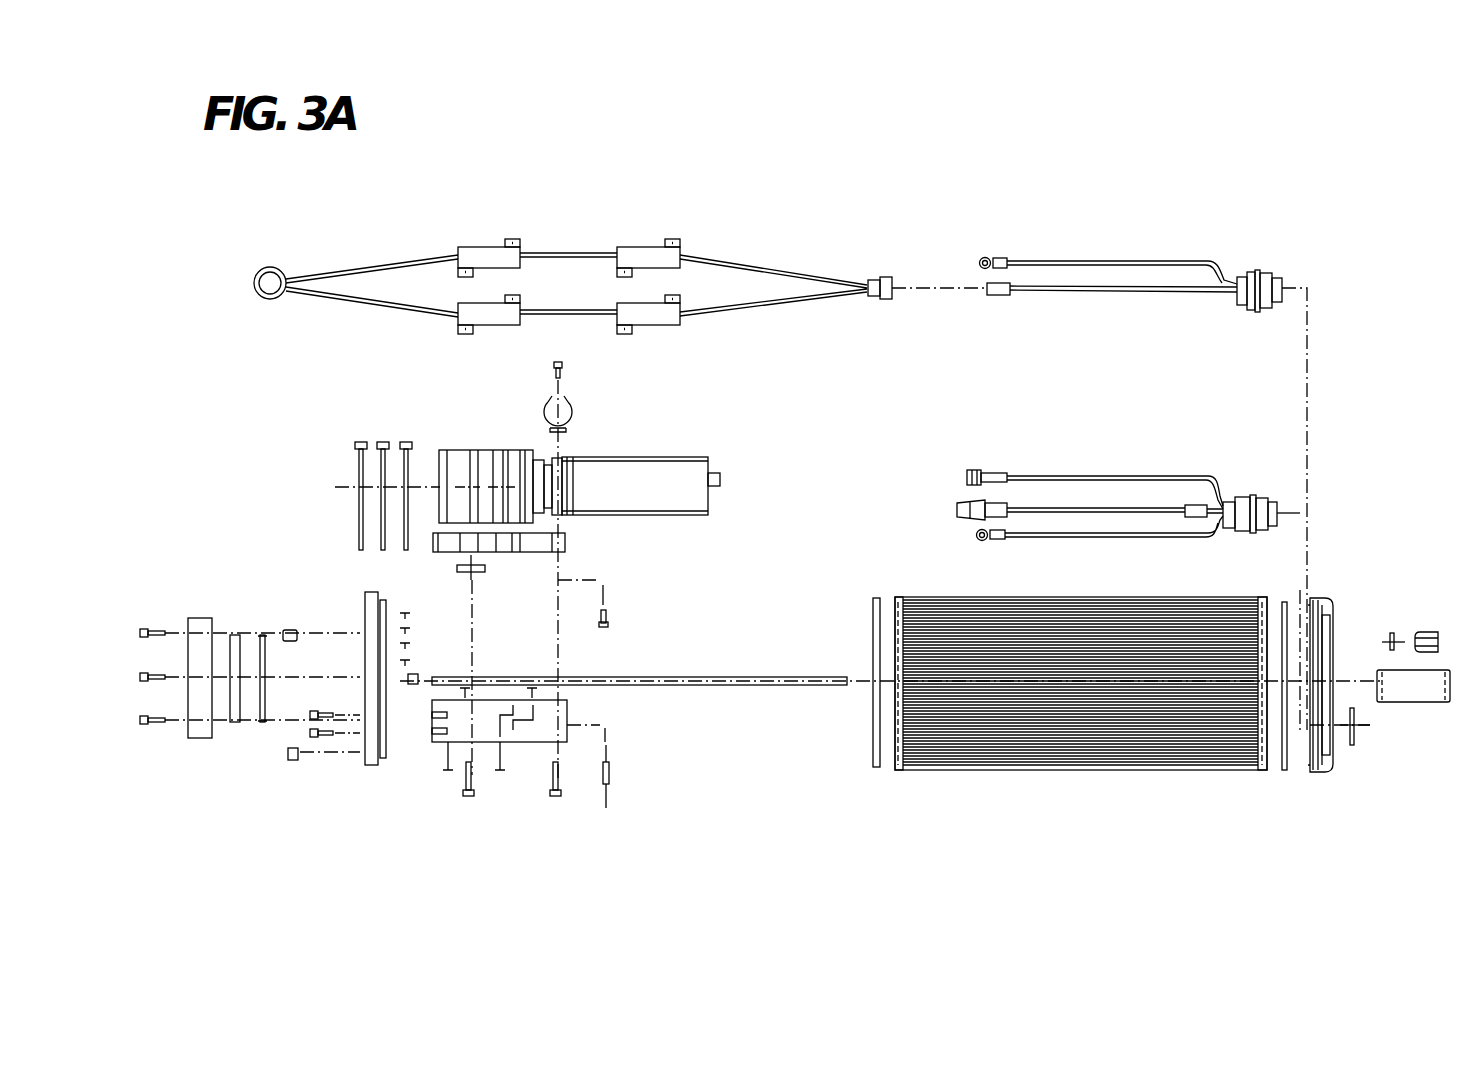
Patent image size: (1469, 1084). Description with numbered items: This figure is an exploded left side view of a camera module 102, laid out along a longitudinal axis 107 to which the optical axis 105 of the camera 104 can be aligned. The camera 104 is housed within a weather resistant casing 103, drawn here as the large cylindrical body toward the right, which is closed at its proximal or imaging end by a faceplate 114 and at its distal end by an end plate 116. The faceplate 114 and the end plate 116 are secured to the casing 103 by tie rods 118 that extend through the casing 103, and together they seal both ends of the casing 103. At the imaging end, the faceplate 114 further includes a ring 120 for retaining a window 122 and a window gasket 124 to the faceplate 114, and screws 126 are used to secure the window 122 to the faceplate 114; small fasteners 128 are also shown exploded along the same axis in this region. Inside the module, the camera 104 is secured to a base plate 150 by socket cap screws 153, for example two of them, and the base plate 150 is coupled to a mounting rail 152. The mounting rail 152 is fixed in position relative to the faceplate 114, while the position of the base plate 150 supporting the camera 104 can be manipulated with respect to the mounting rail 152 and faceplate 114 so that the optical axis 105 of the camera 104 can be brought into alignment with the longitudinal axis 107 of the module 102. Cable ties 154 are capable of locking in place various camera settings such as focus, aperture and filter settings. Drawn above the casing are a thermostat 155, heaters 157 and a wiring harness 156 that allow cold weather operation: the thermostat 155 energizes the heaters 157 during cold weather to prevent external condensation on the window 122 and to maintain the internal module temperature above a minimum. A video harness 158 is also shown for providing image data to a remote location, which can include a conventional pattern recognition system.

The camera module 102 is at (862, 424).
The weather resistant casing 103 is at (1055, 771).
The camera 104 is at (708, 515).
The optical axis 105 is at (335, 487).
The longitudinal axis 107 is at (862, 683).
The faceplate 114 is at (370, 766).
The end plate 116 is at (1325, 773).
The tie rods 118 is at (735, 685).
The ring 120 is at (200, 740).
The window 122 is at (233, 632).
The window gasket 124 is at (263, 723).
The screws 126 is at (150, 628).
The nuts 128 is at (290, 628).
The base plate 150 is at (566, 543).
The mounting rail 152 is at (567, 708).
The socket cap screws 153 is at (608, 618).
The cable ties 154 is at (362, 440).
The thermostat 155 is at (270, 266).
The wiring harness 156 is at (1095, 263).
The heaters 157 is at (682, 253).
The video harness 158 is at (1253, 497).